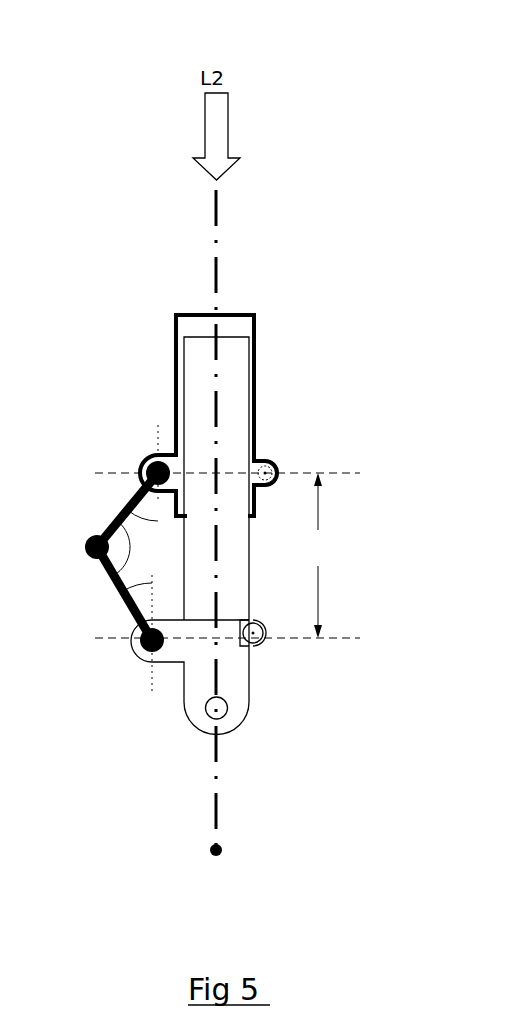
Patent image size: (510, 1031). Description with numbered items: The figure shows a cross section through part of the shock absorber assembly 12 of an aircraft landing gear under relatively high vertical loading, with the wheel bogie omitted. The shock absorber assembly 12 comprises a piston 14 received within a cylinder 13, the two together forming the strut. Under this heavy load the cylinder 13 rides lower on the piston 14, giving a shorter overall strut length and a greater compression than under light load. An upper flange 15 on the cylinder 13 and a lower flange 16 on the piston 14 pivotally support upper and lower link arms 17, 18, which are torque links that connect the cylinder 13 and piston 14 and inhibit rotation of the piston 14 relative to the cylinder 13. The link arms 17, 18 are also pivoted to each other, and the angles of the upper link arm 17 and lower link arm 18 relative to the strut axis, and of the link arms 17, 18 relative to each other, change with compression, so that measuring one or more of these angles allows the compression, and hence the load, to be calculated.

The shock absorber assembly 12 is at (303, 277).
The cylinder 13 is at (168, 313).
The piston 14 is at (230, 373).
The upper flange 15 is at (140, 457).
The lower flange 16 is at (143, 663).
The upper link arm 17 is at (118, 517).
The lower link arm 18 is at (108, 595).